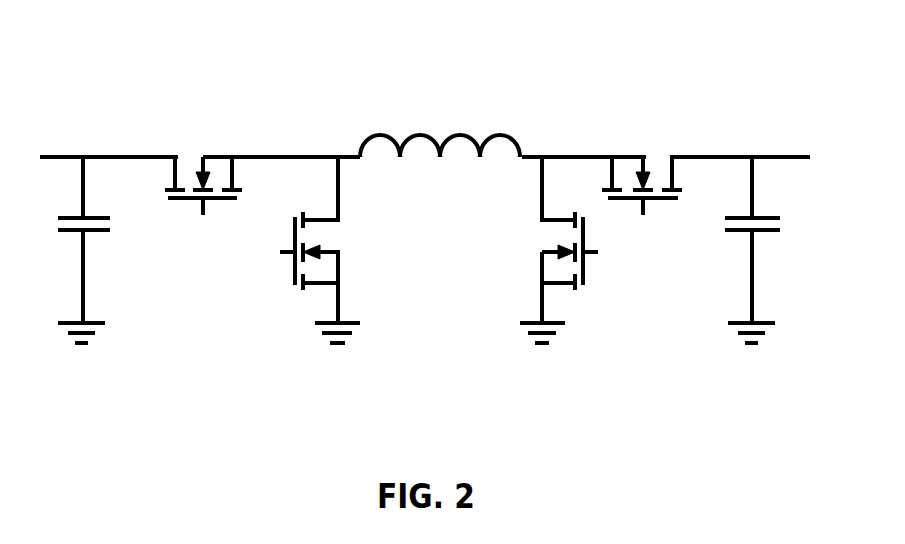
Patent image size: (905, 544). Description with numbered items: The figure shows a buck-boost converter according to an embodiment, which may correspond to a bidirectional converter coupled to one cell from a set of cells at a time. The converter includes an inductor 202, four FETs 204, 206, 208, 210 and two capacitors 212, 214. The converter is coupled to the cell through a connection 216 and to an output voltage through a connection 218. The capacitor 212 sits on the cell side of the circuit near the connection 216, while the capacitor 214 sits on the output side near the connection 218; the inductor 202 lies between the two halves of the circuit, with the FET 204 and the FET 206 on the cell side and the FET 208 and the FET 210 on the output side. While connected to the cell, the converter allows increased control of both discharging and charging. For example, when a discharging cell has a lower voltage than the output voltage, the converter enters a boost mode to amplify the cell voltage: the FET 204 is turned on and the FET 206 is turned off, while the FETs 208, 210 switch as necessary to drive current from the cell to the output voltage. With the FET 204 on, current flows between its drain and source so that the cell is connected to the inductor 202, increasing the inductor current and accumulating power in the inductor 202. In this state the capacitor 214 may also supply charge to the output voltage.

The inductor 202 is at (438, 127).
The FET 204 is at (202, 147).
The FET 206 is at (338, 240).
The FET 208 is at (537, 240).
The FET 210 is at (632, 147).
The capacitor 212 is at (112, 220).
The capacitor 214 is at (720, 226).
The connection 216 is at (36, 148).
The connection 218 is at (793, 148).